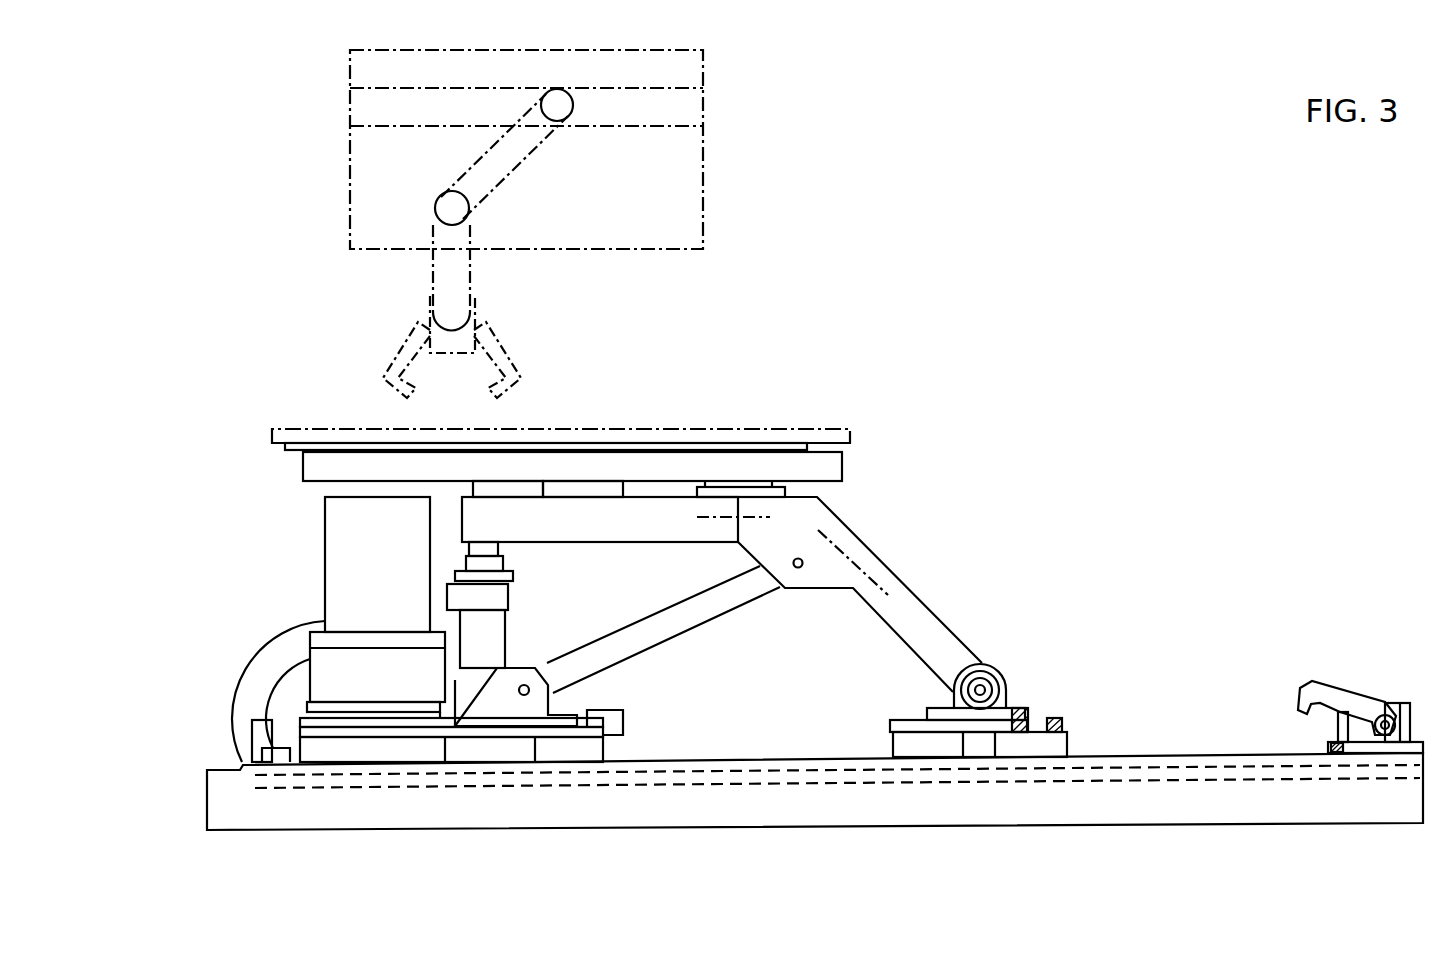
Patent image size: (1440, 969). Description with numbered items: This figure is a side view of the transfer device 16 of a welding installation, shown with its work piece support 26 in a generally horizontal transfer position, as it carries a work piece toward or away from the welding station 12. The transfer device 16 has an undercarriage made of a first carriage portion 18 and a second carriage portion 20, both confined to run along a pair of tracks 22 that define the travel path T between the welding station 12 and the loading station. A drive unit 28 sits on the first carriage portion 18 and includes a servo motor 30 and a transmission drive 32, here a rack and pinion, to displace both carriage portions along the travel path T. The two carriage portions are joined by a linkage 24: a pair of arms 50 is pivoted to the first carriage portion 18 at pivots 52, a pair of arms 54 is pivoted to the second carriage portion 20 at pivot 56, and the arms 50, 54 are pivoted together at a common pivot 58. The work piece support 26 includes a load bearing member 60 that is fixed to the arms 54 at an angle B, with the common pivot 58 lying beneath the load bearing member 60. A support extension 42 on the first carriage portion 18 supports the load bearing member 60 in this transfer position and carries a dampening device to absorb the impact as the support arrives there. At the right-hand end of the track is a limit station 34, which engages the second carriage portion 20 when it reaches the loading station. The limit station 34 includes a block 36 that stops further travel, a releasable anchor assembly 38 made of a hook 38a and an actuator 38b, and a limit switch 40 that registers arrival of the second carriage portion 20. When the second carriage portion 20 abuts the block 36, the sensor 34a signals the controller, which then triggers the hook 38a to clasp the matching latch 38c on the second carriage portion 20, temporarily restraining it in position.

The welding station 12 is at (240, 352).
The transfer device 16 is at (891, 294).
The first carriage portion 18 is at (605, 756).
The second carriage portion 20 is at (1092, 727).
The tracks 22 is at (1267, 641).
The linkage 24 is at (934, 501).
The work piece support 26 is at (755, 382).
The drive unit 28 is at (286, 496).
The servo motor 30 is at (325, 548).
The transmission drive 32 is at (300, 683).
The limit station 34 is at (1395, 676).
The sensor 34a is at (1378, 764).
The block 36 is at (1392, 745).
The releasable anchor assembly 38 is at (1350, 656).
The hook 38a is at (1325, 690).
The actuator 38b is at (1338, 716).
The latch 38c is at (1053, 717).
The limit switch 40 is at (1336, 754).
The support extension 42 is at (505, 560).
The arms 50 is at (708, 612).
The pivots 52 is at (526, 684).
The arms 54 is at (922, 598).
The pivot 56 is at (982, 688).
The common pivot 58 is at (798, 569).
The load bearing member 60 is at (622, 512).
The angle beta B is at (833, 540).
The travel path T is at (870, 803).